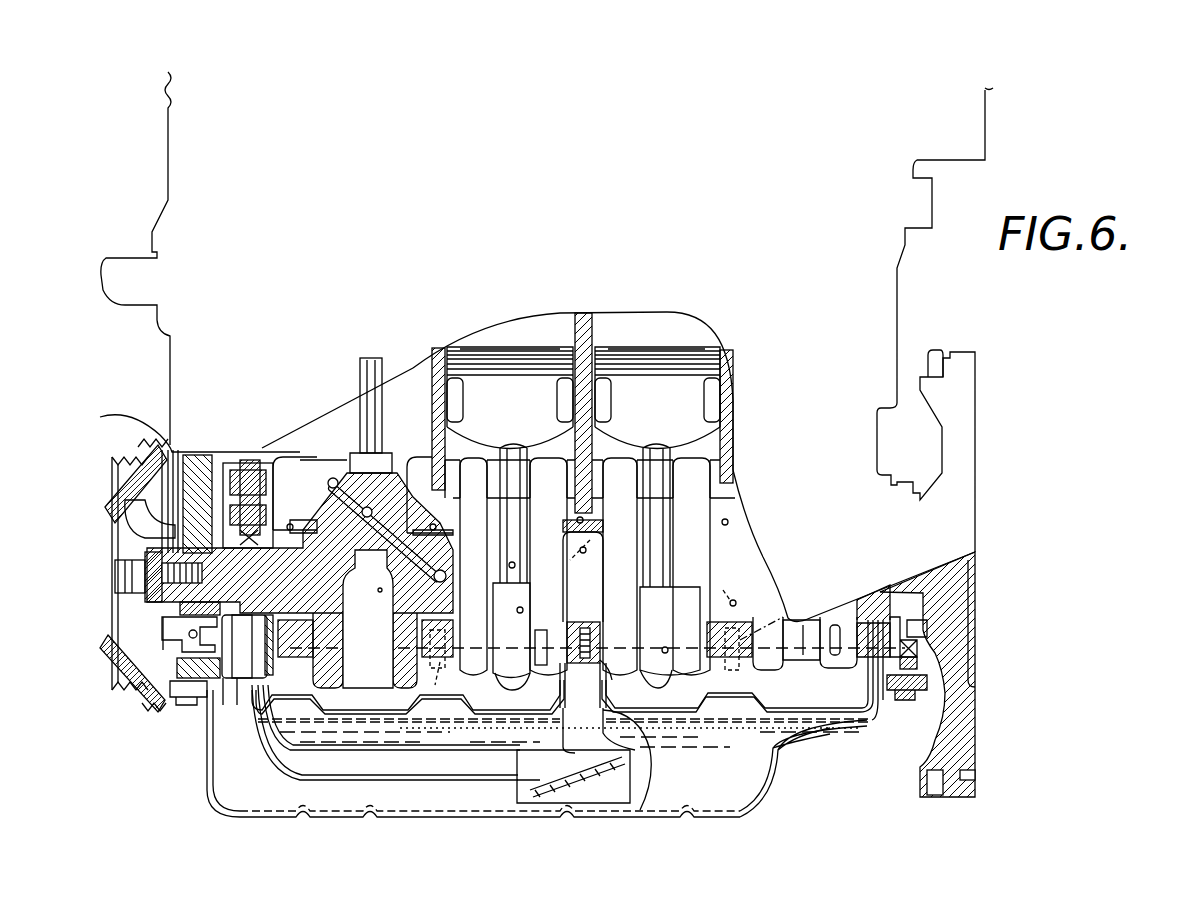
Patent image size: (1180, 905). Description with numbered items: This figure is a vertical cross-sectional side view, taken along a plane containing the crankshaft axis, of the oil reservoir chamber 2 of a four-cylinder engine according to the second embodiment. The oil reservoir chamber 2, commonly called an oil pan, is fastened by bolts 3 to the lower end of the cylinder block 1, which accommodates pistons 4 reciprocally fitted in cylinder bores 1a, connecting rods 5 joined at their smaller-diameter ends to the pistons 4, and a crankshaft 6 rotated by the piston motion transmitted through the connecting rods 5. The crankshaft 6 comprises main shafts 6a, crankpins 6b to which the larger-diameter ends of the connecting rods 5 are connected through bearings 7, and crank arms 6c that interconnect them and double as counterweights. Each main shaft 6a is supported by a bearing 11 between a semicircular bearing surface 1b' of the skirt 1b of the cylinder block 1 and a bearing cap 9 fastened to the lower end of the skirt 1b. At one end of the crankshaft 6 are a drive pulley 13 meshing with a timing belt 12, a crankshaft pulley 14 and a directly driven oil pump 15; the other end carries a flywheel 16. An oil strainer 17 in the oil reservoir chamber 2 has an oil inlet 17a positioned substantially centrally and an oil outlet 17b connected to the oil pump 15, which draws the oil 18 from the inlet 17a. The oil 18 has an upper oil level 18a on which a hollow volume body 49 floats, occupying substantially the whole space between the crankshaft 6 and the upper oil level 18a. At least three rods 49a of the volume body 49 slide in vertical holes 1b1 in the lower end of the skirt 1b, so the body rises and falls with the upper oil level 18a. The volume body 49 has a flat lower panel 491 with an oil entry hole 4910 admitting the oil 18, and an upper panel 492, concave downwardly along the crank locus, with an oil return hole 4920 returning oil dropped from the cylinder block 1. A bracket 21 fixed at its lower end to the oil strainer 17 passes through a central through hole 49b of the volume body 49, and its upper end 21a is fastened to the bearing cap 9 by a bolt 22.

The cylinder block 1 is at (897, 306).
The cylinder bore 1a is at (573, 322).
The skirt 1b is at (525, 554).
The semicircular bearing surface 1b' is at (555, 553).
The vertical hole 1b1 is at (790, 618).
The oil reservoir chamber 2 is at (775, 800).
The bolt 3 is at (185, 700).
The piston 4 is at (487, 345).
The connecting rod 5 is at (380, 385).
The crankshaft 6 is at (743, 489).
The main shaft 6a is at (300, 590).
The crankpin 6b is at (362, 492).
The crank arm 6c is at (478, 500).
The bearing 7 is at (380, 456).
The bearing cap 9 is at (290, 655).
The bearing 11 is at (330, 600).
The timing belt 12 is at (195, 460).
The drive pulley 13 is at (168, 522).
The crankshaft pulley 14 is at (130, 690).
The oil pump 15 is at (229, 460).
The flywheel 16 is at (925, 765).
The oil strainer 17 is at (385, 805).
The oil inlet 17a is at (592, 803).
The oil outlet 17b is at (225, 725).
The oil 18 is at (725, 795).
The upper oil level 18a is at (870, 708).
The bracket 21 is at (648, 770).
The upper end 21a is at (535, 640).
The bolt 22 is at (573, 663).
The volume body 49 is at (280, 752).
The rod 49a is at (577, 631).
The through hole 49b is at (610, 680).
The lower panel 491 is at (790, 745).
The upper panel 492 is at (737, 671).
The oil entry hole 4910 is at (630, 720).
The oil return hole 4920 is at (493, 683).